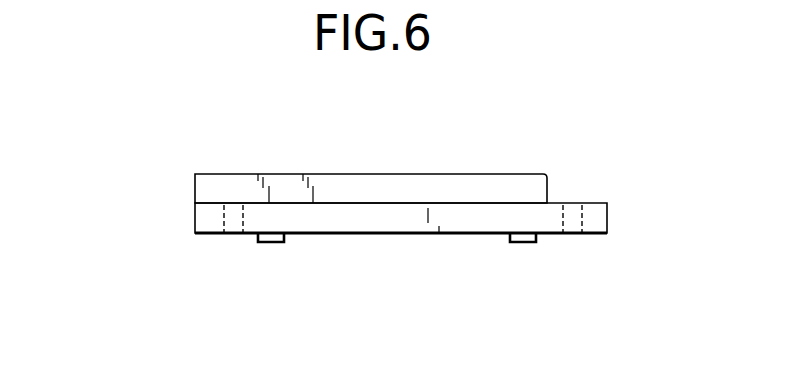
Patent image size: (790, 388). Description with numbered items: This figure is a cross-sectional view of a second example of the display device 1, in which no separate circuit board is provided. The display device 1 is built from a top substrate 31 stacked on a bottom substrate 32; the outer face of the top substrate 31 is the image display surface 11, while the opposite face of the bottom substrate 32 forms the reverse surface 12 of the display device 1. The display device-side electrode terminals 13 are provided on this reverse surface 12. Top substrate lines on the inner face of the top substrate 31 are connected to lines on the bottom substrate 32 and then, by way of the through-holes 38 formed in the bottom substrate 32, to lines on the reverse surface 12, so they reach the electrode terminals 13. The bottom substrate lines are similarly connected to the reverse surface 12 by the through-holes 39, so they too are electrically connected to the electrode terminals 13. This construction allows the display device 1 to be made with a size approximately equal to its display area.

The display device 1 is at (603, 159).
The image display surface 11 is at (382, 157).
The reverse surface 12 is at (382, 254).
The display device-side electrode terminals 13 is at (272, 243).
The top substrate 31 is at (195, 179).
The bottom substrate 32 is at (195, 217).
The through-holes 38 is at (233, 236).
The through-holes 39 is at (577, 236).